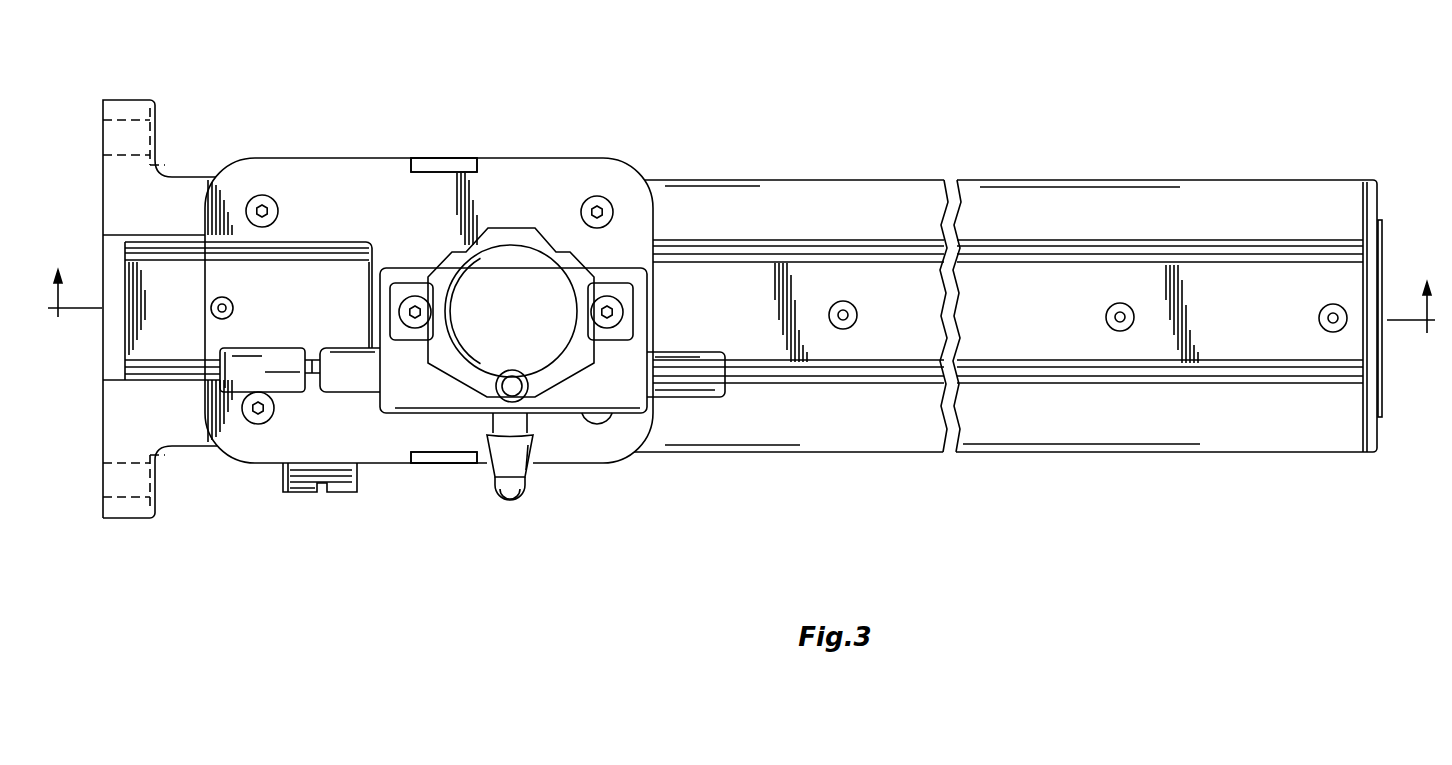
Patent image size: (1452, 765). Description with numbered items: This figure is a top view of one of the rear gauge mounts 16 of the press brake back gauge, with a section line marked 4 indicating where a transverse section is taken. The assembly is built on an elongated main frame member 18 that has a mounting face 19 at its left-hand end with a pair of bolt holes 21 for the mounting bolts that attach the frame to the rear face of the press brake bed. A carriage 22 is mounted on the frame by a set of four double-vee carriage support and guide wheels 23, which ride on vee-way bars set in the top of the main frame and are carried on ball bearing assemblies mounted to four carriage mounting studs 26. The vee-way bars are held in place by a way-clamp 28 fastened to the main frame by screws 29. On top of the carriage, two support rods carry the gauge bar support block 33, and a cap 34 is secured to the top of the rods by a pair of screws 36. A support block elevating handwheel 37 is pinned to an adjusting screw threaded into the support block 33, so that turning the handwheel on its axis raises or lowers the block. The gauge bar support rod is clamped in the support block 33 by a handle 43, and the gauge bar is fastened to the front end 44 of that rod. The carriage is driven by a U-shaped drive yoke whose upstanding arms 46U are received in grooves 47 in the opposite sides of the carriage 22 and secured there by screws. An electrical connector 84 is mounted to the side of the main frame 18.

The rear gauge mount 16 is at (1012, 68).
The main frame member 18 is at (795, 452).
The mounting face 19 is at (102, 405).
The bolt holes 21 is at (158, 138).
The carriage 22 is at (365, 168).
The double-vee carriage support and guide wheels 23 is at (258, 246).
The carriage mounting studs 26 is at (264, 195).
The way-clamp 28 is at (1217, 277).
The screws 29 is at (843, 330).
The gauge bar support block 33 is at (645, 406).
The cap 34 is at (612, 290).
The screws 36 is at (412, 296).
The support block elevating handwheel 37 is at (505, 227).
The handle 43 is at (518, 462).
The front end of the gauge bar support rod 44 is at (218, 350).
The upstanding arms 46U is at (457, 163).
The grooves 47 is at (440, 170).
The electrical connector 84 is at (305, 480).
The section line 4- 4 is at (741, 315).